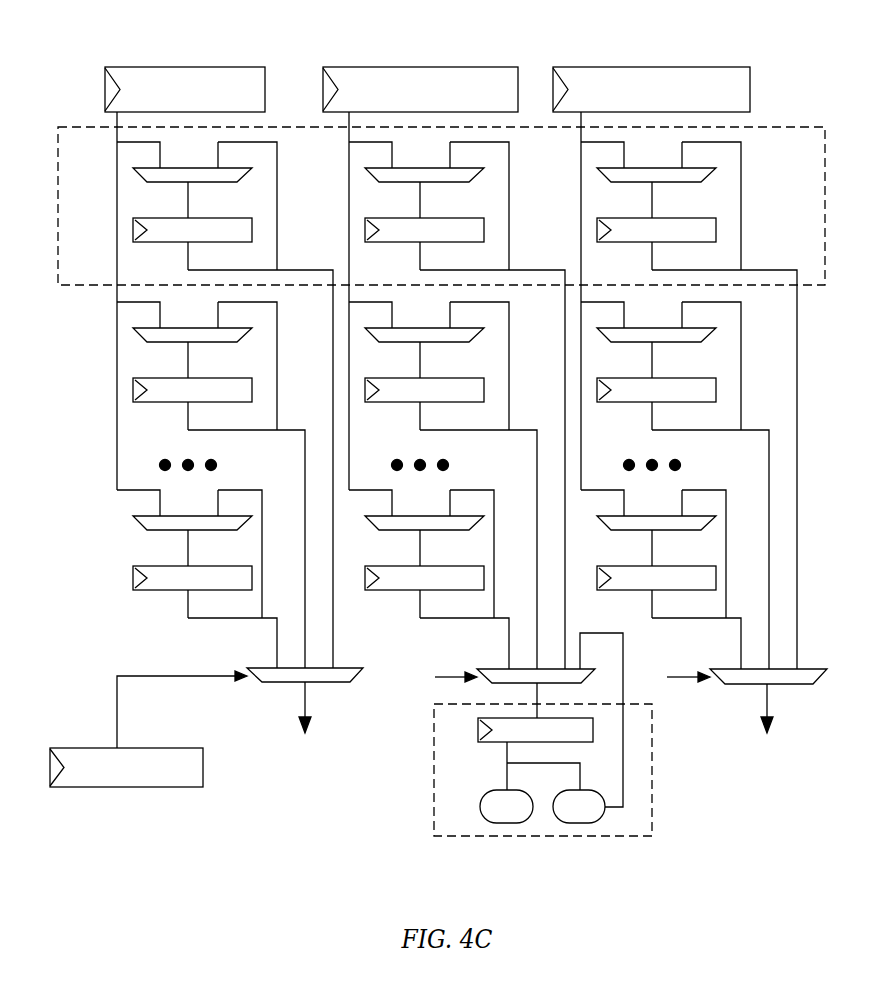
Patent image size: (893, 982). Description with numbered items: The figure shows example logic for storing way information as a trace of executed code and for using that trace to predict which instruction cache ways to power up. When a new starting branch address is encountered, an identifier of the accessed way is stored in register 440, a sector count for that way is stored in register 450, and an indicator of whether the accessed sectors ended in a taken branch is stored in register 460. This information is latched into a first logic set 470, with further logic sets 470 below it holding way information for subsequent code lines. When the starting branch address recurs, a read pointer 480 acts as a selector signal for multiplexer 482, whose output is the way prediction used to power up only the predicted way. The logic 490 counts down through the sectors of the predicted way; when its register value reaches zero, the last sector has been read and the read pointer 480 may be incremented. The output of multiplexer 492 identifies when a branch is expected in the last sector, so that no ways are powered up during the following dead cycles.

The register 440 is at (182, 67).
The register 450 is at (427, 67).
The register 460 is at (647, 67).
The logic set 470 is at (72, 285).
The read pointer 480 is at (108, 787).
The multiplexer 482 is at (353, 682).
The logic 490 is at (542, 836).
The multiplexer 492 is at (807, 684).